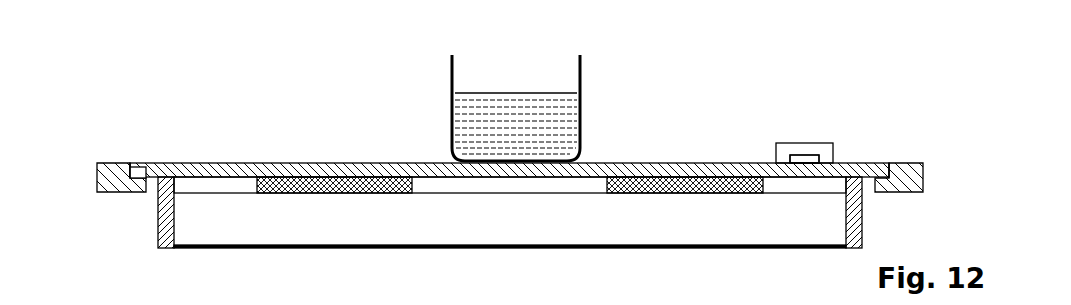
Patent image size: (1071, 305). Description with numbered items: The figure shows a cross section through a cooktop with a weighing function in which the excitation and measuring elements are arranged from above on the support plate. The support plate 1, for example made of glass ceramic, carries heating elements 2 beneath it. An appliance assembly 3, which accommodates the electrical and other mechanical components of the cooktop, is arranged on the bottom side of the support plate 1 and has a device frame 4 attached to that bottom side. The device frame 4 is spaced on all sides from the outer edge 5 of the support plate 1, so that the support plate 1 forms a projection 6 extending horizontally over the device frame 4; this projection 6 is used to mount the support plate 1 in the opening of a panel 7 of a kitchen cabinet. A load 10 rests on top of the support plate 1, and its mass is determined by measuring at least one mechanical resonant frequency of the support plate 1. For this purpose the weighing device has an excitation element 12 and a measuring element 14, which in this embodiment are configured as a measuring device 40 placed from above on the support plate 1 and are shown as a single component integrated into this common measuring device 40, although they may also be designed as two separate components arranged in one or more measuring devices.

The support plate 1 is at (232, 170).
The heating element 2 is at (333, 186).
The appliance assembly 3 is at (138, 235).
The device frame 4 is at (168, 213).
The outer edge 5 is at (130, 168).
The projection 6 is at (146, 172).
The panel 7 is at (112, 169).
The load 10 is at (456, 108).
The excitation element 12 is at (800, 155).
The measuring element 14 is at (804, 159).
The measuring device 40 is at (823, 143).